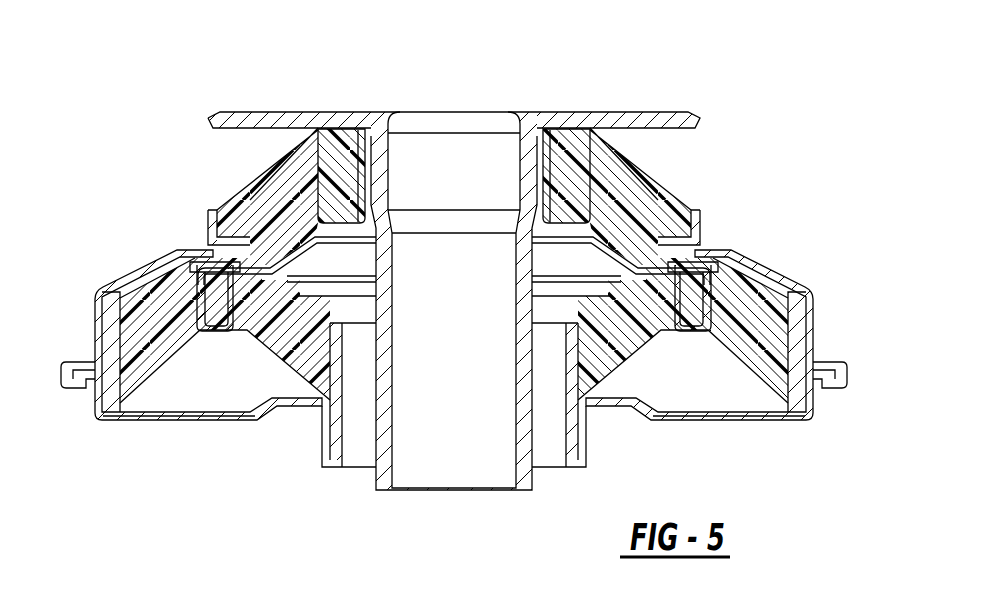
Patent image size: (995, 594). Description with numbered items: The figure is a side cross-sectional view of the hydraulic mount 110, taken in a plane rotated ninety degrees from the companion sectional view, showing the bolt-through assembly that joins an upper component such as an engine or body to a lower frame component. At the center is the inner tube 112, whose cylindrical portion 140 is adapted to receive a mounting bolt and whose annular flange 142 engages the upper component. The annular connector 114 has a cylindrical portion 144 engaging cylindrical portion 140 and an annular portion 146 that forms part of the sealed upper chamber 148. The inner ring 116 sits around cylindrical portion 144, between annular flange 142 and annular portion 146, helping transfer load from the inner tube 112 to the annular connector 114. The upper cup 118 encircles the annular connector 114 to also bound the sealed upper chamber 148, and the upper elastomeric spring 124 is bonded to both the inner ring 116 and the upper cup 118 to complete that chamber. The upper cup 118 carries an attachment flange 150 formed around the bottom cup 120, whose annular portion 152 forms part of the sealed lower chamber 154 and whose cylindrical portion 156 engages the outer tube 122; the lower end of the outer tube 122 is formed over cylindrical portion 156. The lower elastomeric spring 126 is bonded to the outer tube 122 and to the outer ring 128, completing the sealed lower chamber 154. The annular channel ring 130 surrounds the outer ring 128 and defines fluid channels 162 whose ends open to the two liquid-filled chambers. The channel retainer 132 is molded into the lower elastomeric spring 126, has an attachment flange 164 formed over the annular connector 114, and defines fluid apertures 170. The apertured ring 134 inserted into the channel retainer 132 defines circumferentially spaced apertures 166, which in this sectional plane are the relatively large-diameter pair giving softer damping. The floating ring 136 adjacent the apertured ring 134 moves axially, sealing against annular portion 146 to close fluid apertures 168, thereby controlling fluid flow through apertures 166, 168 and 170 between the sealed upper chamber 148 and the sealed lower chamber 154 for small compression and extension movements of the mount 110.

The mount 110 is at (268, 85).
The inner tube 112 is at (355, 112).
The annular connector 114 is at (660, 197).
The inner ring 116 is at (600, 133).
The upper cup 118 is at (813, 325).
The bottom cup 120 is at (687, 413).
The outer tube 122 is at (343, 430).
The upper elastomeric spring 124 is at (643, 183).
The lower elastomeric spring 126 is at (177, 323).
The outer ring 128 is at (130, 392).
The annular channel ring 130 is at (817, 393).
The channel retainer 132 is at (772, 268).
The apertured ring 134 is at (760, 320).
The floating ring 136 is at (748, 262).
The cylindrical portion 140 is at (392, 316).
The annular flange 142 is at (562, 118).
The cylindrical portion 144 is at (371, 168).
The annular portion 146 is at (262, 185).
The sealed upper chamber 148 is at (247, 200).
The attachment flange 150 is at (65, 392).
The annular portion 152 is at (200, 412).
The sealed lower chamber 154 is at (203, 368).
The cylindrical portion 156 is at (322, 438).
The fluid channel 162 is at (800, 343).
The attachment flange 164 is at (192, 255).
The aperture 166 is at (715, 262).
The fluid aperture 168 is at (683, 235).
The fluid aperture 170 is at (193, 352).